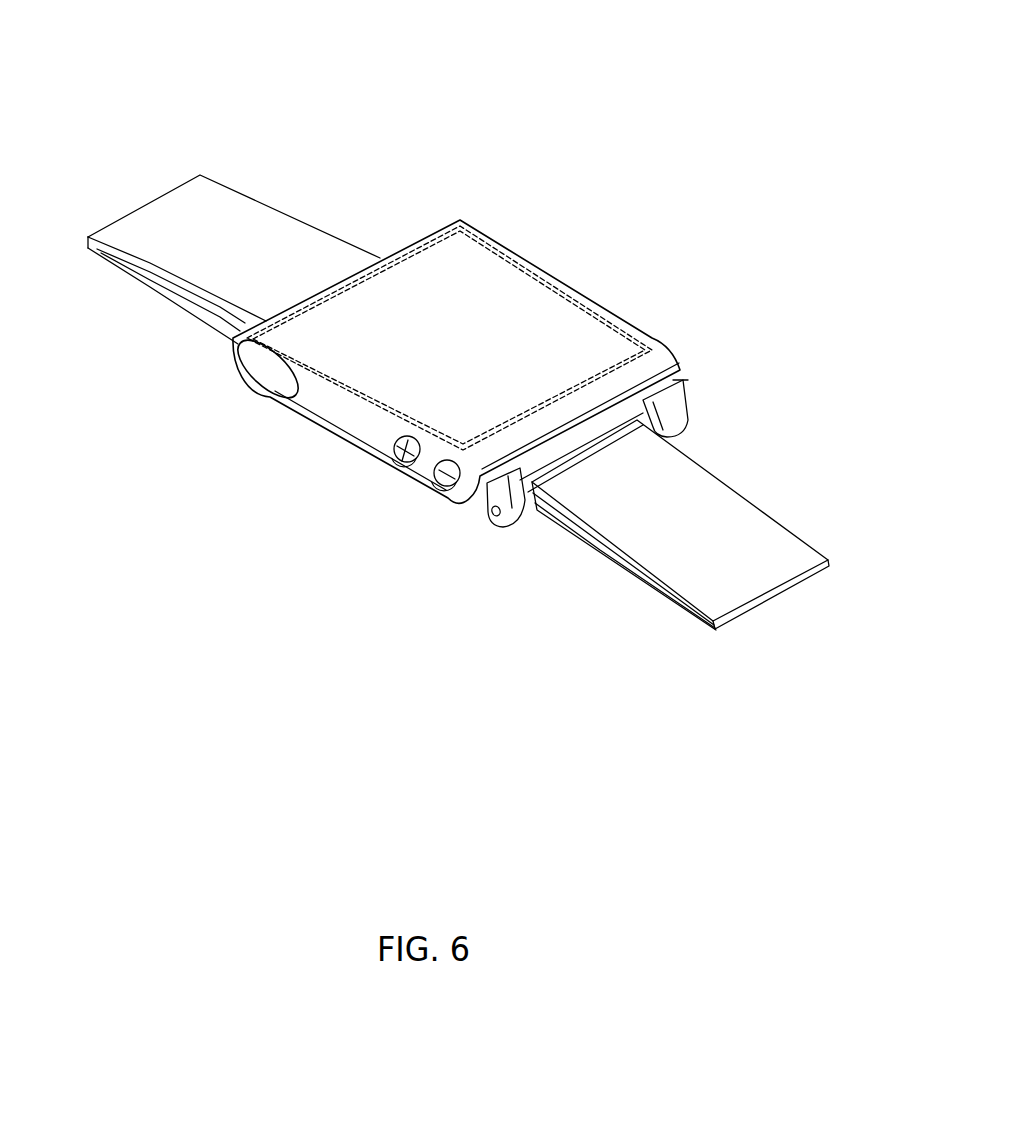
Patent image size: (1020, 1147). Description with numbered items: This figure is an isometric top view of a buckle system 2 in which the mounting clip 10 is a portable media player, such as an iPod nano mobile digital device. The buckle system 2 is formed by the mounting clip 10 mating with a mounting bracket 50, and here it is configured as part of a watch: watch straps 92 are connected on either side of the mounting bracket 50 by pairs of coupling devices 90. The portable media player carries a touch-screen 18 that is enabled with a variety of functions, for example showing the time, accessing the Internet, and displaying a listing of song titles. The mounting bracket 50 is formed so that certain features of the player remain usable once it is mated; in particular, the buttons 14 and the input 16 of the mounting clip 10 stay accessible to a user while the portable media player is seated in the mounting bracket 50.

The buckle system 2 is at (520, 67).
The mounting clip 10 is at (541, 288).
The touch-screen 18 is at (440, 280).
The input 16 is at (270, 370).
The buttons 14 is at (400, 447).
The mounting bracket 50 is at (462, 522).
The coupling devices 90 is at (680, 395).
The watch straps 92 is at (162, 227).